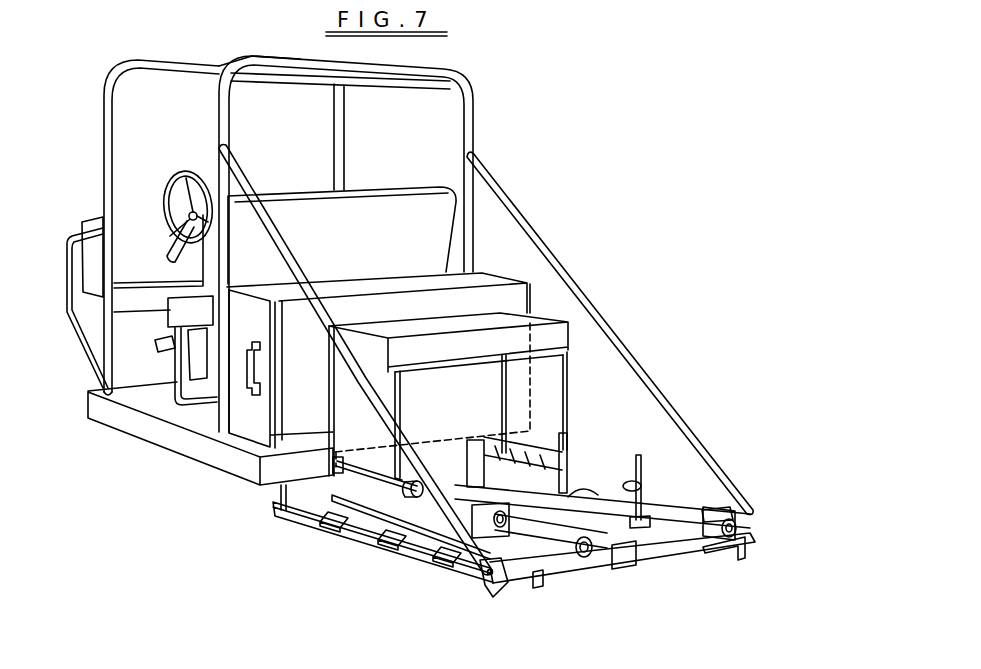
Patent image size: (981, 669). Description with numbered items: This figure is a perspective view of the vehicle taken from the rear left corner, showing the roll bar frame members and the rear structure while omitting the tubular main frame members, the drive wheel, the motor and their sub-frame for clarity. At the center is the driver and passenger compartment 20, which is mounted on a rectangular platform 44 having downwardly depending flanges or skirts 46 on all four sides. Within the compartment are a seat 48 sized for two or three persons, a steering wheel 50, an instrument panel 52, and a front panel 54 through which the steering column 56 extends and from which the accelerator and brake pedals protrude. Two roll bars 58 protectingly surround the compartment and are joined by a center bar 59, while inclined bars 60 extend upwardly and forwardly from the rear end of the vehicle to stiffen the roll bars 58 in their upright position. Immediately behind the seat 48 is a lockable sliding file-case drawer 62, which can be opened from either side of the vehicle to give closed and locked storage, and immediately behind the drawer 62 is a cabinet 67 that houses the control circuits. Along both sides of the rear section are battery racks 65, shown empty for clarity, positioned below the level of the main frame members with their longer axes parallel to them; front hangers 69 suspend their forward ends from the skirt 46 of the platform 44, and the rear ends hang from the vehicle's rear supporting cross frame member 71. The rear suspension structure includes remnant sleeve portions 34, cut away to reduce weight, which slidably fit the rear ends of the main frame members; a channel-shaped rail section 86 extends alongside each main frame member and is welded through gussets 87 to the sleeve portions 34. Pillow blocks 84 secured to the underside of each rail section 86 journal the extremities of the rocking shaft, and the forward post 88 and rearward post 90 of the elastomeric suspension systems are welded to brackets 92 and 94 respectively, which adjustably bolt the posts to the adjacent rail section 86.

The driver and passenger compartment 20 is at (220, 62).
The remnant sleeve portions 34 is at (389, 485).
The platform 44 is at (130, 440).
The flanges or skirts 46 is at (273, 477).
The seat 48 is at (176, 318).
The steering wheel 50 is at (187, 172).
The instrument panel 52 is at (128, 233).
The front panel 54 is at (72, 306).
The steering column 56 is at (168, 262).
The roll bars 58 is at (112, 96).
The center bar 59 is at (280, 82).
The inclined bars 60 is at (294, 247).
The file-case drawer 62 is at (241, 330).
The battery racks 65 is at (325, 525).
The cabinet 67 is at (448, 396).
The hangers 69 is at (280, 493).
The rear supporting cross frame member 71 is at (651, 543).
The pillow blocks 84 is at (495, 548).
The channel-shaped rail section 86 is at (547, 535).
The gussets 87 is at (407, 474).
The forward post 88 is at (566, 447).
The rearward post 90 is at (642, 465).
The bracket 92 is at (575, 492).
The bracket 94 is at (648, 520).